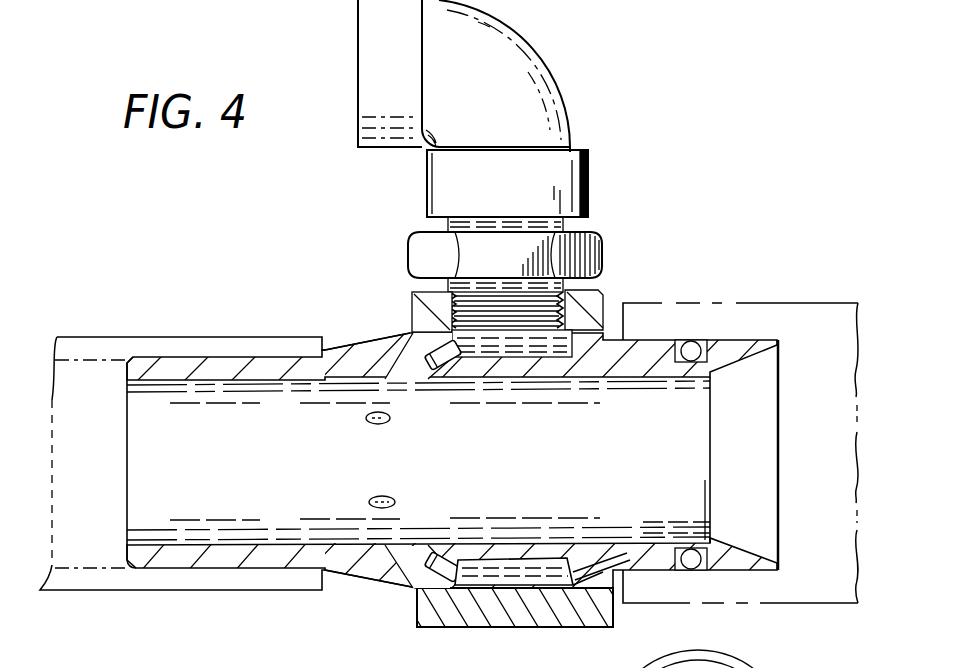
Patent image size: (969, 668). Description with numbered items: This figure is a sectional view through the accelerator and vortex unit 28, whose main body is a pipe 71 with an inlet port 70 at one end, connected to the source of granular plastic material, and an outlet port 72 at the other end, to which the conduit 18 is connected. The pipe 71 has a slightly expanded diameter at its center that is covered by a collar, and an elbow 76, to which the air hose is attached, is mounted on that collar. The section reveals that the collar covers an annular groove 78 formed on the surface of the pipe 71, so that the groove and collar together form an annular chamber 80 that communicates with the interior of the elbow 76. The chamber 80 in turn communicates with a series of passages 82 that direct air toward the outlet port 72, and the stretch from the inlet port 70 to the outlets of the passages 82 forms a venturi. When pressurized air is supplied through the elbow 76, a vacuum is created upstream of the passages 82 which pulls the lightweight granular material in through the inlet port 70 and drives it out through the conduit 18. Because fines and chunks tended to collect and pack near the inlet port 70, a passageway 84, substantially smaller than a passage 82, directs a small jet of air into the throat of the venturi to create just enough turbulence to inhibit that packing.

The elbow 76 is at (519, 63).
The conduit 18 is at (177, 333).
The accelerator and vortex unit 28 is at (392, 326).
The passages 82 is at (365, 422).
The annular groove 78 is at (567, 347).
The outlet port 72 is at (150, 546).
The pipe 71 is at (385, 585).
The annular chamber 80 is at (505, 563).
The passageway 84 is at (578, 565).
The inlet port 70 is at (692, 546).